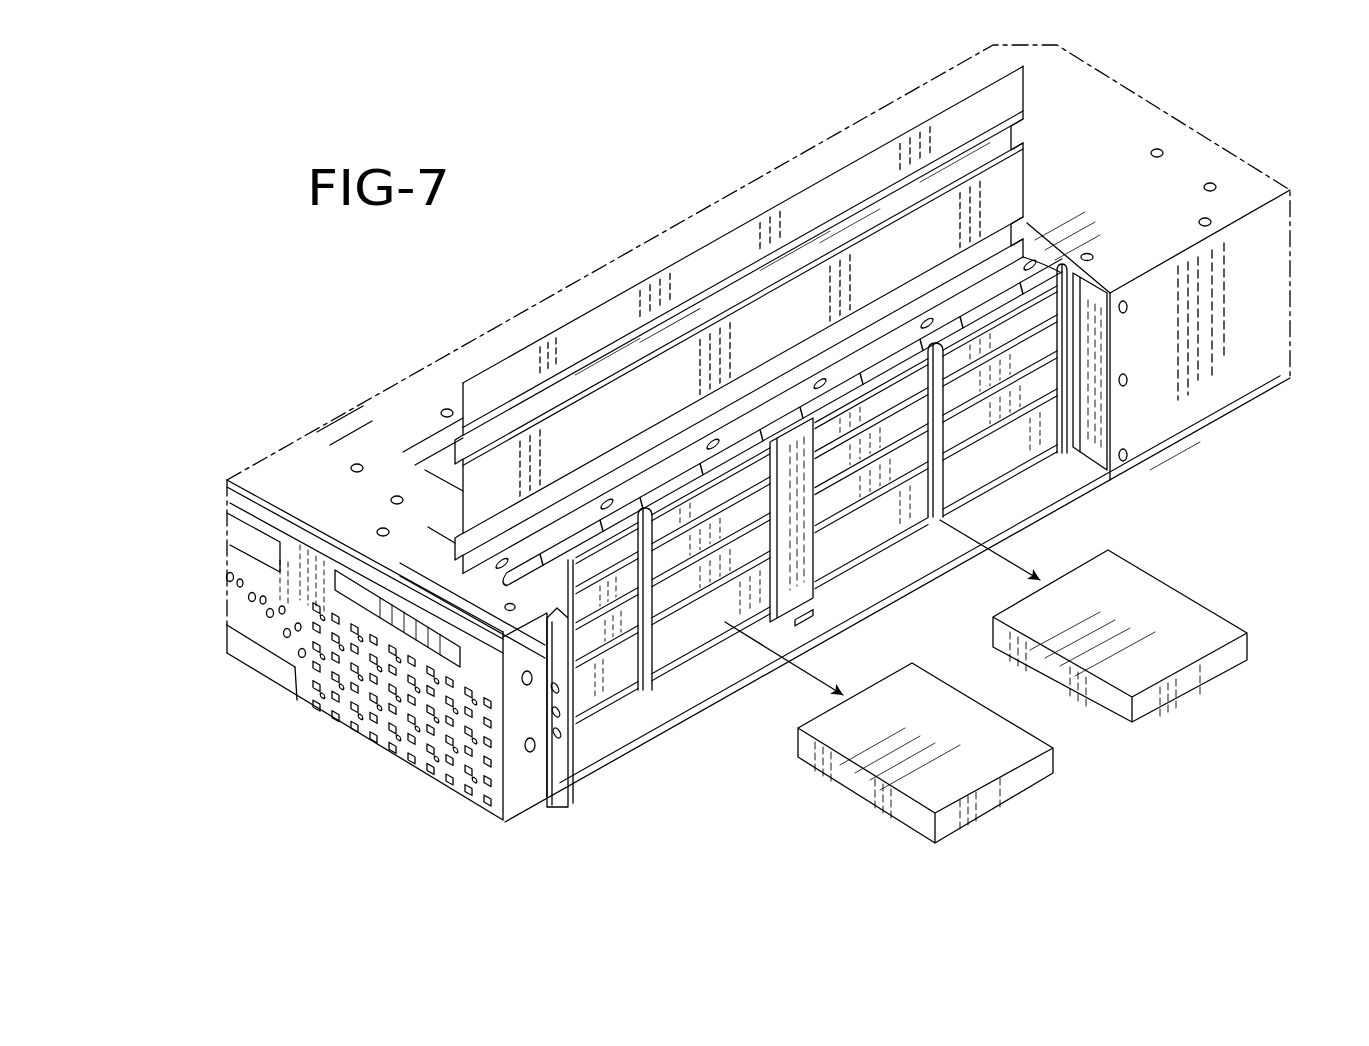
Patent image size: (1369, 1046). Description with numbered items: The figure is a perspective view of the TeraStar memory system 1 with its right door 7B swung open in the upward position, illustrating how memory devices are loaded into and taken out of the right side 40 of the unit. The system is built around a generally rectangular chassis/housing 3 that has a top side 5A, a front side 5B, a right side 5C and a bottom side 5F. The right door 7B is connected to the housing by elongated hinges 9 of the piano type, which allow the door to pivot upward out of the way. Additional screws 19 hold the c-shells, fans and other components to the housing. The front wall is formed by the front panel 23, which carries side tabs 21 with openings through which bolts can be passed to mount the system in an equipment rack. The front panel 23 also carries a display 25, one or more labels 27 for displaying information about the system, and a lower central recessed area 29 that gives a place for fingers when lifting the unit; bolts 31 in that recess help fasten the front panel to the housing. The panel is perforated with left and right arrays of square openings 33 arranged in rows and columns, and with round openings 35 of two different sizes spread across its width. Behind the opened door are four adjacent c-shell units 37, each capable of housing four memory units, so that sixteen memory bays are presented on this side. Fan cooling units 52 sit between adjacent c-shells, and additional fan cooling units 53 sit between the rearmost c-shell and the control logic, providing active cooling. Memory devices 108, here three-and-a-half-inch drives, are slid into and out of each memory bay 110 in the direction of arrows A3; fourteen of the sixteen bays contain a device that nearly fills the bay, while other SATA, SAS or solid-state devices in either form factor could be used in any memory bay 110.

The TeraStar memory system 1 is at (1192, 106).
The chassis/housing 3 is at (1222, 415).
The top side 5A is at (388, 416).
The front side 5B is at (224, 557).
The right side 5C is at (1260, 317).
The bottom side 5F is at (1157, 452).
The right door 7B is at (498, 370).
The elongated hinges 9 is at (1023, 288).
The screws 19 is at (446, 407).
The side tabs 21 is at (558, 790).
The front panel 23 is at (305, 556).
The display 25 is at (247, 512).
The labels 27 is at (357, 585).
The lower central recessed area 29 is at (252, 650).
The bolts 31 is at (292, 668).
The square openings 33 is at (332, 709).
The round openings 35 is at (268, 614).
The c-shell units 37 is at (594, 718).
The right side 40 is at (1180, 538).
The fan cooling units 52 is at (812, 592).
The additional fan cooling units 53 is at (1072, 395).
The memory devices 108 is at (1227, 660).
The memory bay 110 is at (683, 669).
The arrows A3 is at (882, 610).